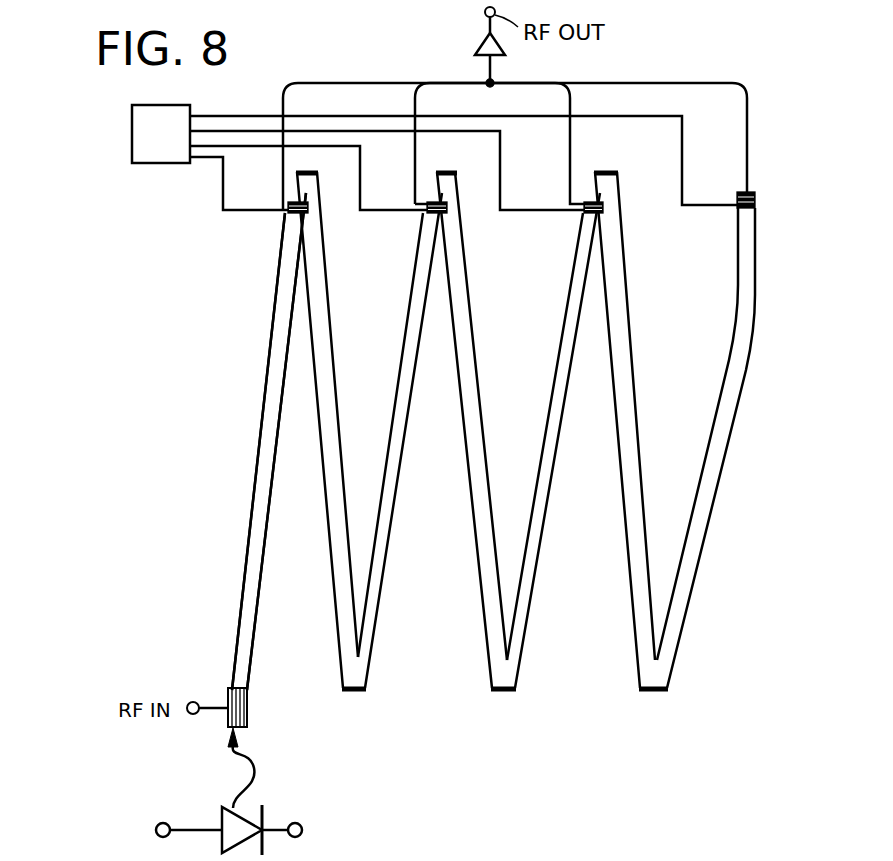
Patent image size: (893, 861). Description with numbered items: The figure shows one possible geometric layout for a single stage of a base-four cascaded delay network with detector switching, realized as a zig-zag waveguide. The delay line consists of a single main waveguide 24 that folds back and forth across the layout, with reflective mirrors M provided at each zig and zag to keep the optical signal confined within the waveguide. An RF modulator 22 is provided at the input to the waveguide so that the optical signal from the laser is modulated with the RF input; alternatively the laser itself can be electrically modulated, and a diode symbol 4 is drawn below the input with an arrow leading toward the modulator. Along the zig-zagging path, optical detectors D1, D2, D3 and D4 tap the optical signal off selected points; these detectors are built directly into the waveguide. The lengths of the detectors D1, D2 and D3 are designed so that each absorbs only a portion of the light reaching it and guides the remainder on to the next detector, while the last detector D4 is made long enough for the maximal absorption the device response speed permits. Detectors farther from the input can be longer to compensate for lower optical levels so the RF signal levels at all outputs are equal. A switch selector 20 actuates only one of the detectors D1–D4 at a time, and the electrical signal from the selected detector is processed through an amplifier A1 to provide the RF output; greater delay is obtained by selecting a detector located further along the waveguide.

The switch selector 20 is at (145, 152).
The RF modulator 22 is at (248, 708).
The main waveguide 24 is at (270, 333).
The diode 4 is at (266, 812).
The optical detector D1 is at (287, 216).
The optical detector D2 is at (425, 216).
The optical detector D3 is at (585, 216).
The optical detector D4 is at (737, 210).
The reflective mirror M is at (299, 174).
The amplifier A1 is at (477, 47).